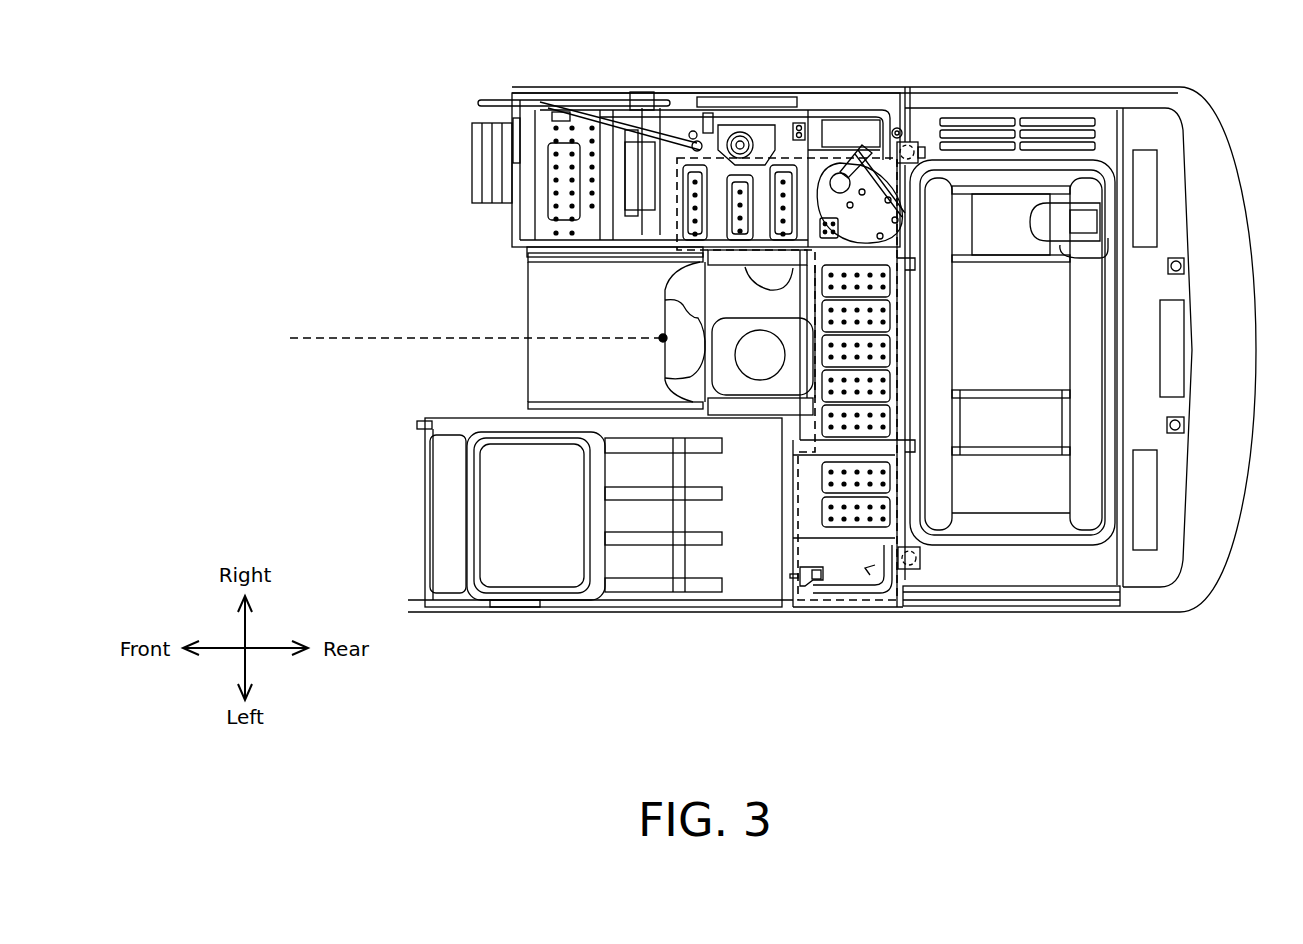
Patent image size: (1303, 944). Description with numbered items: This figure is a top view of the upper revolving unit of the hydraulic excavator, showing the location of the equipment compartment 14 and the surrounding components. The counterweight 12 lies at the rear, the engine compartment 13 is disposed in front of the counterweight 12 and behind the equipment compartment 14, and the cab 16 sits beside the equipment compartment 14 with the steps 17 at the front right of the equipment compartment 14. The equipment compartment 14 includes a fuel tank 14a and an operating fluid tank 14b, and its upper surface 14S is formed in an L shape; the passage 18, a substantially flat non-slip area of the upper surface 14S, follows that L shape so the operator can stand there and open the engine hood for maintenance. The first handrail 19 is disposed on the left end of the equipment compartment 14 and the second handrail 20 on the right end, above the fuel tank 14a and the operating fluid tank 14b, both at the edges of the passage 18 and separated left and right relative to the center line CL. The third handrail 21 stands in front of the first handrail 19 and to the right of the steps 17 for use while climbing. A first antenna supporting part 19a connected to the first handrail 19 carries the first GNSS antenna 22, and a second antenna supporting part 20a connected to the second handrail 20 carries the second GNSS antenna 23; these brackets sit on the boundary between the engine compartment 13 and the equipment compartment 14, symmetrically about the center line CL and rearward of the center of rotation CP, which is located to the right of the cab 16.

The counterweight 12 is at (1205, 590).
The engine compartment 13 is at (1047, 612).
The equipment compartment 14 is at (852, 615).
The fuel tank 14a is at (747, 122).
The operating fluid tank 14b is at (848, 130).
The upper surface 14S is at (888, 612).
The cab 16 is at (618, 586).
The steps 17 is at (462, 160).
The passage 18 is at (705, 90).
The first handrail 19 is at (864, 592).
The first antenna supporting part 19a is at (912, 568).
The second handrail 20 is at (832, 108).
The second antenna supporting part 20a is at (915, 100).
The third handrail 21 is at (490, 100).
The first GNSS antenna 22 is at (920, 560).
The second GNSS antenna 23 is at (928, 135).
The center line CL is at (295, 340).
The center of rotation CP is at (663, 340).